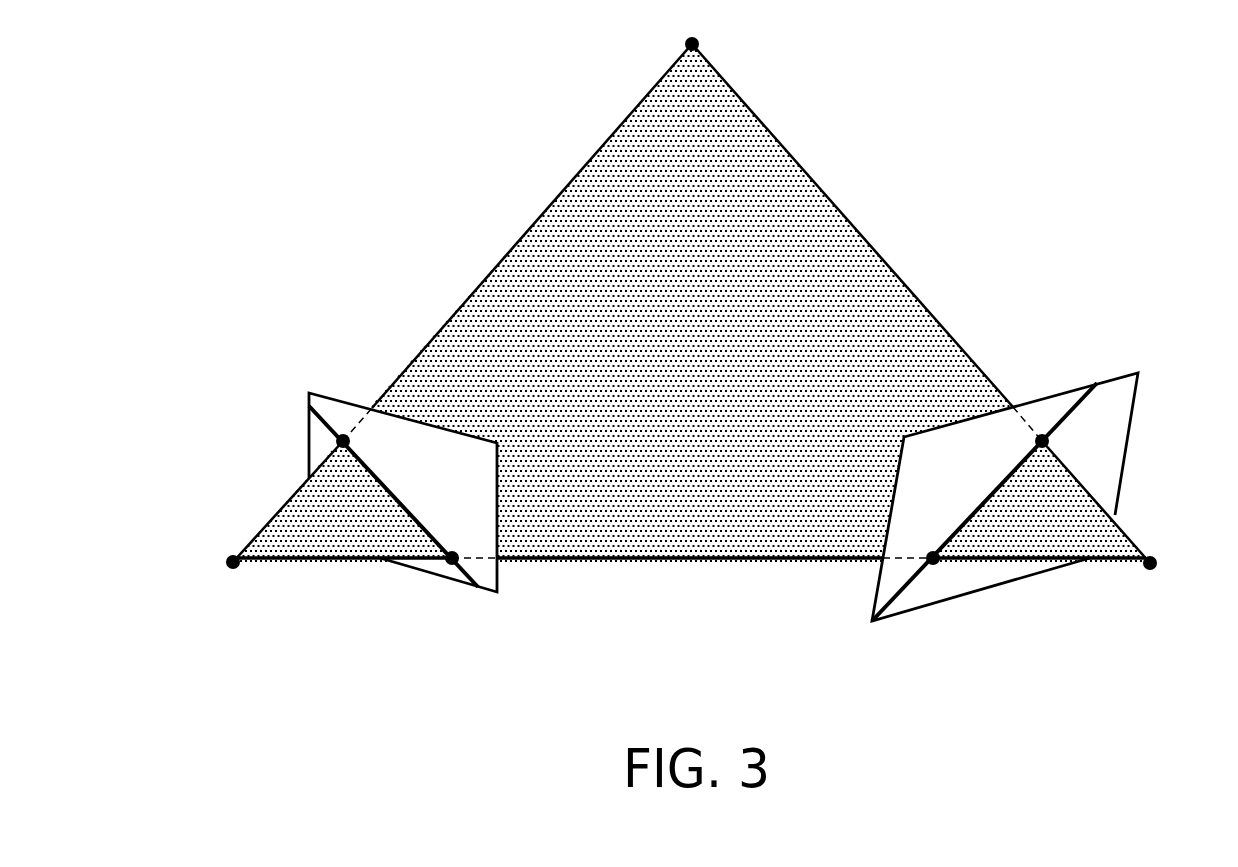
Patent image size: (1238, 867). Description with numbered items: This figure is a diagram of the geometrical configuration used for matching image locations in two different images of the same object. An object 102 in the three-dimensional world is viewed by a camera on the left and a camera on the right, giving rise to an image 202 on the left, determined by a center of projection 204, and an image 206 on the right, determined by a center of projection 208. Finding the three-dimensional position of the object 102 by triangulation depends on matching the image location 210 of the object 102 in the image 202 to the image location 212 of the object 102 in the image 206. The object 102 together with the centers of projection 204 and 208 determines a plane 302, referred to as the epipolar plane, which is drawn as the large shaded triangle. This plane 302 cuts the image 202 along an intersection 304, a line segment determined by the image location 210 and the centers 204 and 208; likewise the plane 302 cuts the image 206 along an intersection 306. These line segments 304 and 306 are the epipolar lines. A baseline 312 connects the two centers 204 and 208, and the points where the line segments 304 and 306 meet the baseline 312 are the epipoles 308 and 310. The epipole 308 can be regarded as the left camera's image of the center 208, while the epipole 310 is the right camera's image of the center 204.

The object 102 is at (699, 43).
The image 202 is at (308, 442).
The center of projection 204 is at (228, 562).
The image 206 is at (1128, 439).
The center of projection 208 is at (1157, 562).
The image location 210 is at (343, 434).
The image location 212 is at (1044, 434).
The plane 302 is at (533, 243).
The intersection 304 is at (399, 498).
The intersection 306 is at (988, 497).
The epipole 308 is at (450, 565).
The epipole 310 is at (937, 567).
The baseline 312 is at (703, 560).